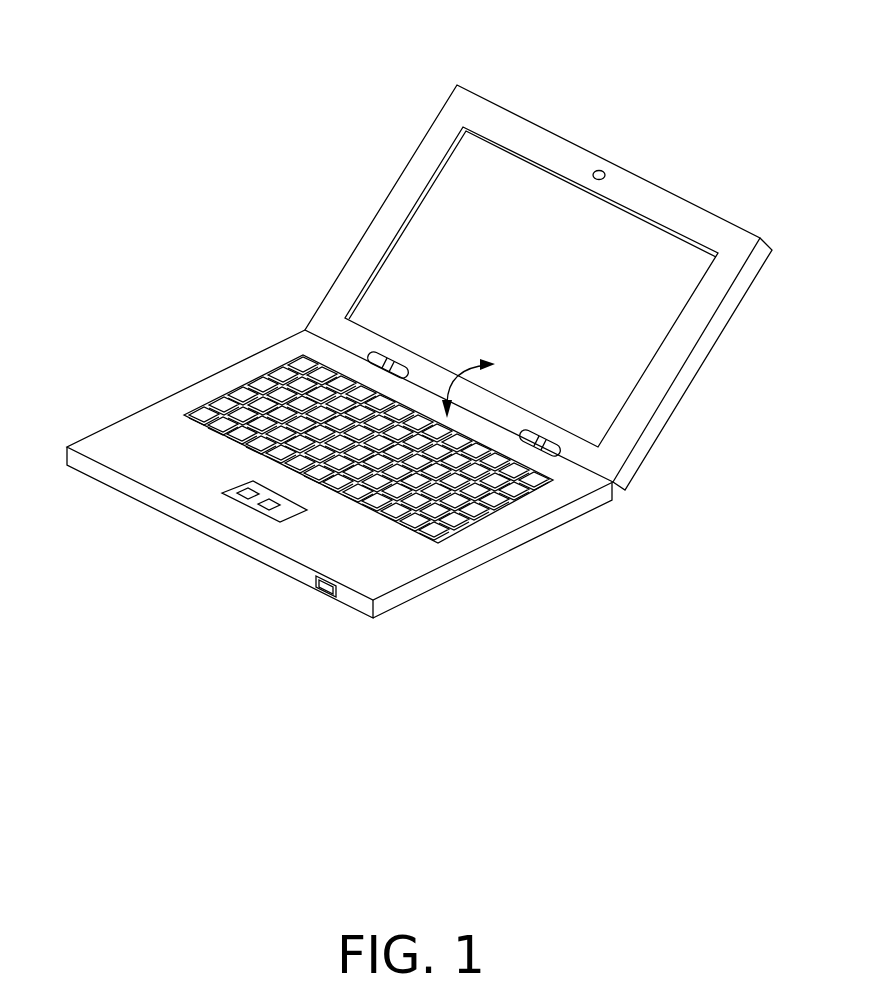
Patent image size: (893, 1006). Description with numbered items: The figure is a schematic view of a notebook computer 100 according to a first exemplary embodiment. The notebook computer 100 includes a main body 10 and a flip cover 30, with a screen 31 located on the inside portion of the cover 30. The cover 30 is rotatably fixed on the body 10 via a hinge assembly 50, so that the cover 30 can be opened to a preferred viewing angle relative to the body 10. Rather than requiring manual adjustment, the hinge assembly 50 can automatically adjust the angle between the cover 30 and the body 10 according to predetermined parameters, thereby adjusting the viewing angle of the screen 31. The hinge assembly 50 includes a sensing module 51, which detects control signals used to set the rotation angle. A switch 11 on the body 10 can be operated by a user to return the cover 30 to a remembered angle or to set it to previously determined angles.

The notebook computer 100 is at (198, 84).
The main body 10 is at (502, 525).
The switch 11 is at (325, 588).
The flip cover 30 is at (645, 207).
The screen 31 is at (458, 193).
The hinge assembly 50 is at (560, 458).
The sensing module 51 is at (604, 169).